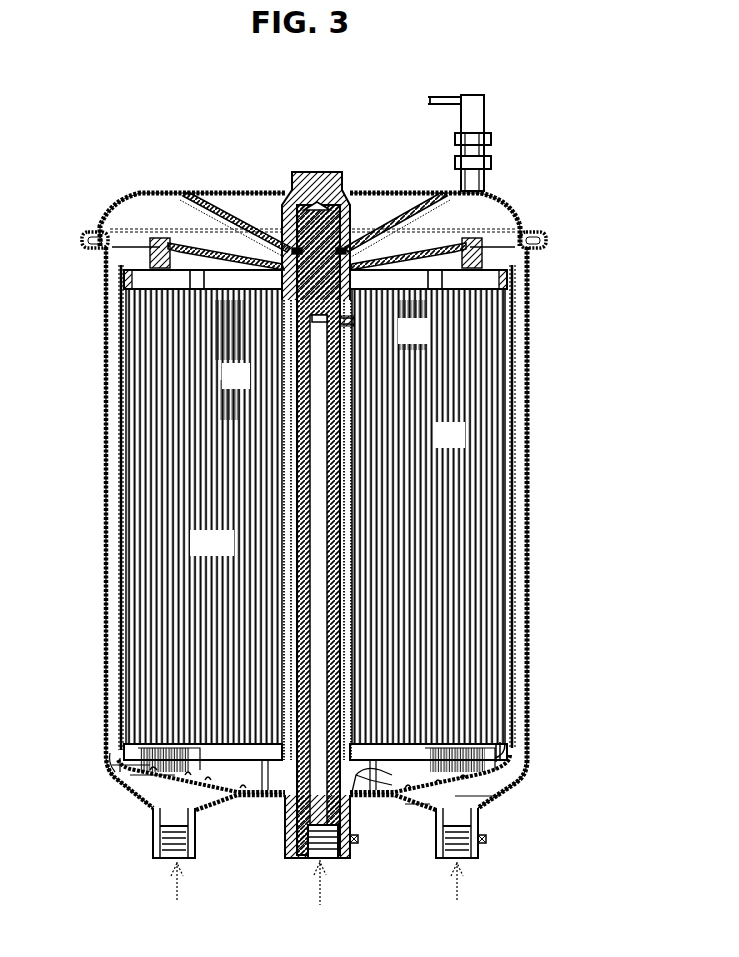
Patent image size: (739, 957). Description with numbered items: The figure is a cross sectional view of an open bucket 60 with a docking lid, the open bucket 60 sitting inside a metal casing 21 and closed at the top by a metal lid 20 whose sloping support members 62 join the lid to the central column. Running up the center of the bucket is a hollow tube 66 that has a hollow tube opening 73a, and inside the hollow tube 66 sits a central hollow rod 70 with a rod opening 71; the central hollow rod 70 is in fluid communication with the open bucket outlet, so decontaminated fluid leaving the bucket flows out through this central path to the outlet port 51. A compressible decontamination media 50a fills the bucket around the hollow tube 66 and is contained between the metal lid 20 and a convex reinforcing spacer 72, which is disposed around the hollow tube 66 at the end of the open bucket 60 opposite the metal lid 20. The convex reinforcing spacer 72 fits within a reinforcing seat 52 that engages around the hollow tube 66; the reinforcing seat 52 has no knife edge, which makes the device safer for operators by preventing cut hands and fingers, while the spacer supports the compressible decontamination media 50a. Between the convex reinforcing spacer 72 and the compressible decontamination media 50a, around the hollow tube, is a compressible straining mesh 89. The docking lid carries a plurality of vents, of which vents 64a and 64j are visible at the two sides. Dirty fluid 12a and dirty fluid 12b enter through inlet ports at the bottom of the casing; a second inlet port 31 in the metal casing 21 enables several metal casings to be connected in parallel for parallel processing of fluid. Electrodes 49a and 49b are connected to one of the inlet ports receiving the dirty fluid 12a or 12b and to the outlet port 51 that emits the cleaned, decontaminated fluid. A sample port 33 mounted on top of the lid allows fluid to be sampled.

The metal lid 20 is at (138, 196).
The metal casing 21 is at (105, 466).
The second inlet port 31 is at (154, 840).
The sample port 33 is at (488, 170).
The electrode 49a is at (487, 838).
The electrode 49b is at (357, 847).
The compressible decontamination media 50a is at (203, 515).
The outlet port 51 is at (290, 842).
The reinforcing seat 52 is at (508, 730).
The open bucket 60 is at (530, 397).
The support strut 62 is at (168, 245).
The vent 64a is at (158, 253).
The vent 64j is at (478, 256).
The hollow tube 66 is at (353, 440).
The central hollow rod 70 is at (296, 377).
The rod opening 71 is at (340, 331).
The convex reinforcing spacer 72 is at (488, 772).
The hollow tube opening 73a is at (402, 793).
The compressible straining mesh 89 is at (110, 765).
The dirty fluid 12a is at (459, 882).
The dirty fluid 12b is at (172, 882).